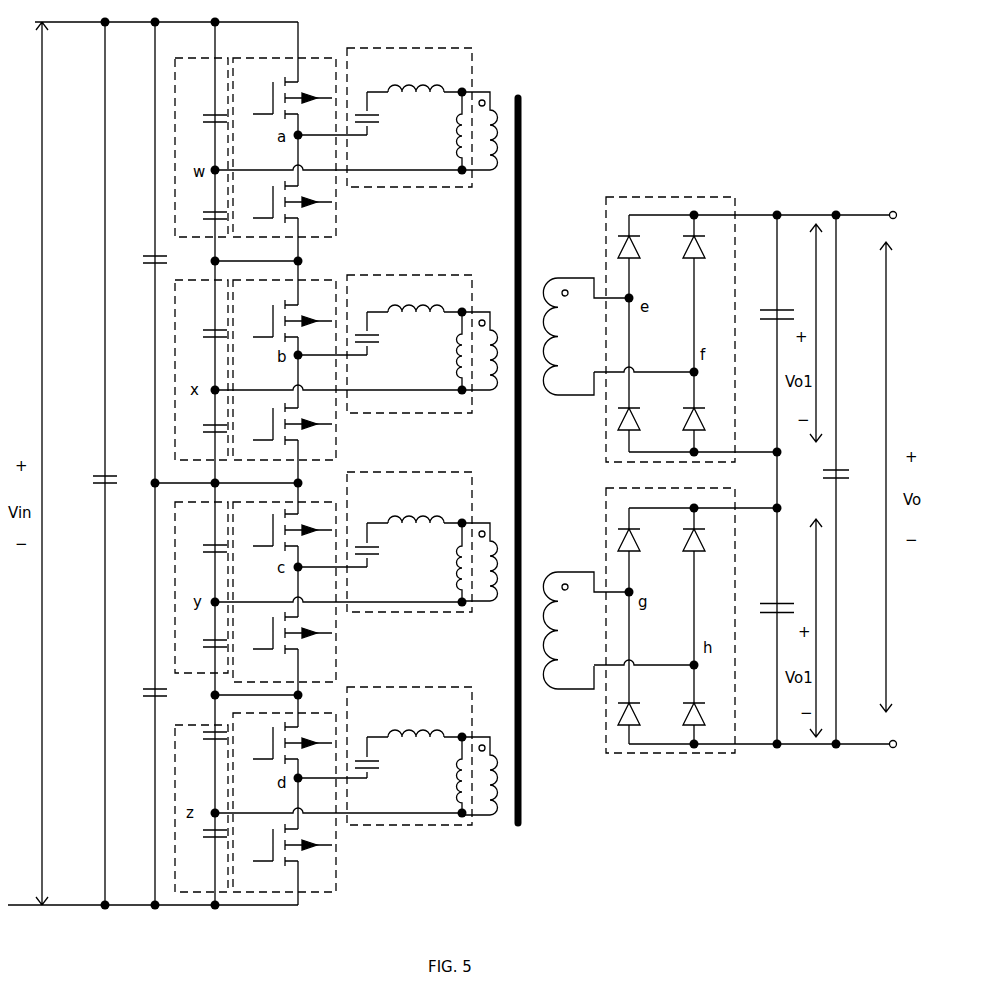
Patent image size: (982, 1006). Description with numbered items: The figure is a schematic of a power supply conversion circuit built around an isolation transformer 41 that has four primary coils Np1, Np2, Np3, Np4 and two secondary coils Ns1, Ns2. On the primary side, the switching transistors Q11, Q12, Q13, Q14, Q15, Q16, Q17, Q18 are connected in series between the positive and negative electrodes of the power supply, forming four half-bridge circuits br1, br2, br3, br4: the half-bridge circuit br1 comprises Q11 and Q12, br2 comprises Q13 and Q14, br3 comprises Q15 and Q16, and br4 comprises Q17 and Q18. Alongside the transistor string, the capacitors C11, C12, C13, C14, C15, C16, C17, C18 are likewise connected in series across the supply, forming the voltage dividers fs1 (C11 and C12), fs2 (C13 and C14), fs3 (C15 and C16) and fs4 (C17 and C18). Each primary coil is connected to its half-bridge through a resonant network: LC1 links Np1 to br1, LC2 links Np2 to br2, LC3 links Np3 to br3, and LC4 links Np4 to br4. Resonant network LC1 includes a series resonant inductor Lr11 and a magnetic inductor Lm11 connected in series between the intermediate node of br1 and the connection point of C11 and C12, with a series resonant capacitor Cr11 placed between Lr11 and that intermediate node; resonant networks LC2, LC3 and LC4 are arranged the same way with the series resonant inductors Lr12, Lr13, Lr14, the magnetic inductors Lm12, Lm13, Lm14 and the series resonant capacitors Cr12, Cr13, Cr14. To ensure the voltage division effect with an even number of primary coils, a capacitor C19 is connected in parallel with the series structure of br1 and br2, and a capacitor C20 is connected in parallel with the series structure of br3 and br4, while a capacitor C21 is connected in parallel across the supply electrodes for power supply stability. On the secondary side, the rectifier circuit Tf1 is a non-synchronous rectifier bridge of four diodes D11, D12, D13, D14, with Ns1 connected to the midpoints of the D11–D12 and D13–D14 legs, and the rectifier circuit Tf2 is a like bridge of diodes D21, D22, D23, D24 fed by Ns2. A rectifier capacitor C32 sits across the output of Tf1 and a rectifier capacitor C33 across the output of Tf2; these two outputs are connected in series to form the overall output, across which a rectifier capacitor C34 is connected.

The capacitor C11 is at (205, 130).
The capacitor C12 is at (205, 206).
The capacitor C13 is at (205, 344).
The capacitor C14 is at (202, 442).
The capacitor C15 is at (205, 563).
The capacitor C16 is at (205, 656).
The capacitor C17 is at (205, 748).
The capacitor C18 is at (205, 843).
The capacitor C19 is at (145, 273).
The capacitor C20 is at (143, 705).
The capacitor C21 is at (92, 489).
The switching transistor Q11 is at (285, 98).
The switching transistor Q12 is at (285, 202).
The switching transistor Q13 is at (285, 321).
The switching transistor Q14 is at (285, 424).
The switching transistor Q15 is at (285, 530).
The switching transistor Q16 is at (285, 633).
The switching transistor Q17 is at (285, 743).
The switching transistor Q18 is at (285, 845).
The voltage divider fs1 is at (228, 58).
The voltage divider fs2 is at (194, 280).
The voltage divider fs3 is at (180, 675).
The voltage divider fs4 is at (203, 725).
The half-bridge circuit br1 is at (313, 58).
The half-bridge circuit br2 is at (316, 280).
The half-bridge circuit br3 is at (306, 502).
The half-bridge circuit br4 is at (310, 713).
The resonant network LC1 is at (470, 37).
The resonant network LC2 is at (470, 264).
The resonant network LC3 is at (470, 461).
The resonant network LC4 is at (462, 676).
The series resonant inductor Lr11 is at (414, 78).
The series resonant inductor Lr12 is at (414, 297).
The series resonant inductor Lr13 is at (414, 509).
The series resonant inductor Lr14 is at (414, 724).
The series resonant capacitor Cr11 is at (387, 113).
The series resonant capacitor Cr12 is at (387, 333).
The series resonant capacitor Cr13 is at (388, 545).
The series resonant capacitor Cr14 is at (388, 757).
The magnetic inductor Lm11 is at (436, 131).
The magnetic inductor Lm12 is at (436, 351).
The magnetic inductor Lm13 is at (435, 563).
The magnetic inductor Lm14 is at (436, 776).
The primary coil Np1 is at (485, 144).
The primary coil Np2 is at (486, 364).
The primary coil Np3 is at (482, 579).
The primary coil Np4 is at (484, 792).
The isolation transformer 41 is at (522, 122).
The rectifier circuit Tf1 is at (677, 197).
The rectifier circuit Tf2 is at (678, 755).
The diode D11 is at (643, 261).
The diode D12 is at (646, 409).
The diode D13 is at (708, 261).
The diode D14 is at (708, 409).
The diode D21 is at (643, 555).
The diode D22 is at (646, 704).
The diode D23 is at (708, 555).
The diode D24 is at (708, 704).
The secondary coil Ns1 is at (586, 336).
The secondary coil Ns2 is at (586, 630).
The rectifier capacitor C32 is at (768, 328).
The rectifier capacitor C33 is at (768, 623).
The rectifier capacitor C34 is at (852, 487).